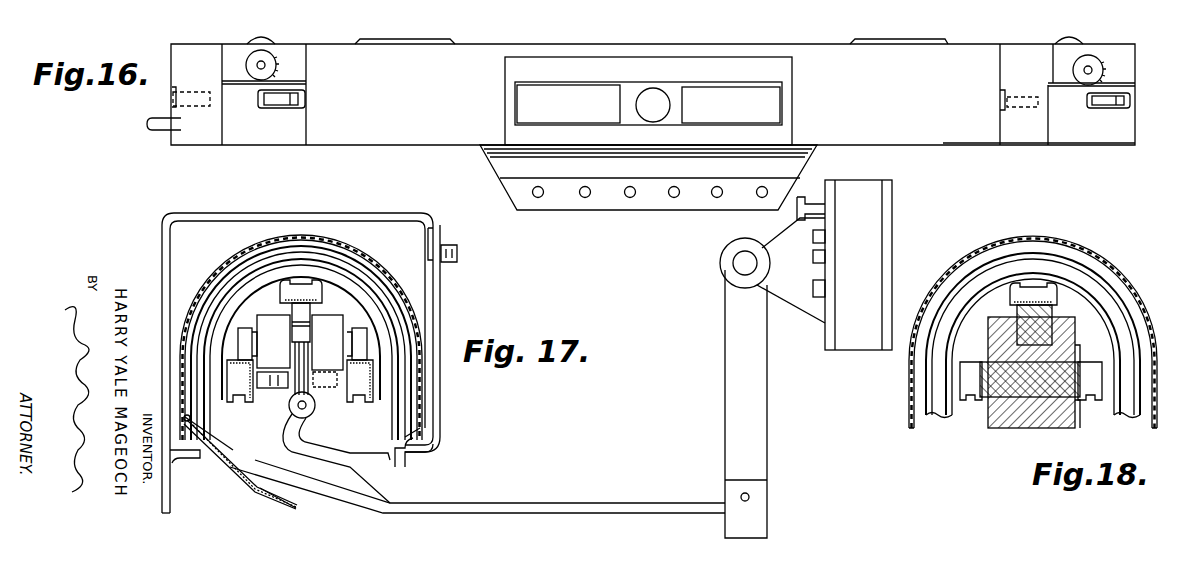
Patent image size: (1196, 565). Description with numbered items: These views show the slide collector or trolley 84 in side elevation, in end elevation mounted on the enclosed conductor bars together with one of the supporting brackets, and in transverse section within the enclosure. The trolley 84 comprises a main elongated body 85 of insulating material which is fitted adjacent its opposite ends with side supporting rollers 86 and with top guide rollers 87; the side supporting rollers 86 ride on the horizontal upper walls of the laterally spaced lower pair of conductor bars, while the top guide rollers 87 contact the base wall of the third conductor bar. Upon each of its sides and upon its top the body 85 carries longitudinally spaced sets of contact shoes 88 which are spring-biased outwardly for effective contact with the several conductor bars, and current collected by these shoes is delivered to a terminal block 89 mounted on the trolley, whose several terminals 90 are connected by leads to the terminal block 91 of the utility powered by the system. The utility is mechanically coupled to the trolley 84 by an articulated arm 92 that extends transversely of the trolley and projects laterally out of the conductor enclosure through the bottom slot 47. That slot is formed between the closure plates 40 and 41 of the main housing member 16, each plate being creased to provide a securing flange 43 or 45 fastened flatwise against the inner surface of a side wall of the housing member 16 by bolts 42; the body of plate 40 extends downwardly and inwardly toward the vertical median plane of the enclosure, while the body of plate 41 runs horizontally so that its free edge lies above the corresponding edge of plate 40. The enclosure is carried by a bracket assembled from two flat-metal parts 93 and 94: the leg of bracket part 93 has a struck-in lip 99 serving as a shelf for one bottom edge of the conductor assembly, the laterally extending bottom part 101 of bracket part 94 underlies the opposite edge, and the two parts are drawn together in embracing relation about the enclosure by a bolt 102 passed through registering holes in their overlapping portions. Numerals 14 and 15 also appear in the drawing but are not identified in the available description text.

In FIG. 17, the bracket / shaft cap 14 is at (320, 290).
In FIG. 18, the bracket / shaft cap 14 is at (1012, 300).
In FIG. 17, the shell 15 is at (356, 262).
In FIG. 18, the shell 15 is at (1115, 303).
In FIG. 17, the main housing member 16 is at (220, 272).
In FIG. 18, the main housing member 16 is at (1098, 256).
In FIG. 17, the closure plate 40 is at (233, 470).
In FIG. 17, the closure plate 41 is at (372, 456).
In FIG. 17, the bolts 42 is at (203, 432).
In FIG. 17, the securing flange 43 is at (195, 447).
In FIG. 17, the securing flange 45 is at (400, 467).
In FIG. 17, the slot 47 is at (300, 488).
In FIG. 16, the trolley 84 is at (497, 63).
In FIG. 17, the trolley 84 is at (332, 330).
In FIG. 18, the trolley 84 is at (1070, 323).
In FIG. 16, the main elongated body 85 is at (641, 94).
In FIG. 18, the main elongated body 85 is at (1076, 347).
In FIG. 16, the side supporting rollers 86 is at (268, 60).
In FIG. 17, the side supporting rollers 86 is at (244, 330).
In FIG. 16, the top guide rollers 87 is at (278, 105).
In FIG. 17, the top guide rollers 87 is at (292, 305).
In FIG. 16, the contact shoes 88 is at (900, 42).
In FIG. 18, the contact shoes 88 is at (1034, 300).
In FIG. 16, the terminal block 89 is at (622, 200).
In FIG. 16, the terminals 90 is at (585, 198).
In FIG. 17, the terminal block 91 is at (845, 325).
In FIG. 17, the articulated arm 92 is at (523, 489).
In FIG. 17, the bracket part 93 is at (162, 244).
In FIG. 17, the bracket part 94 is at (442, 317).
In FIG. 17, the struck-in lip 99 is at (182, 460).
In FIG. 17, the laterally extending bottom part 101 is at (410, 465).
In FIG. 17, the bolt 102 is at (458, 253).